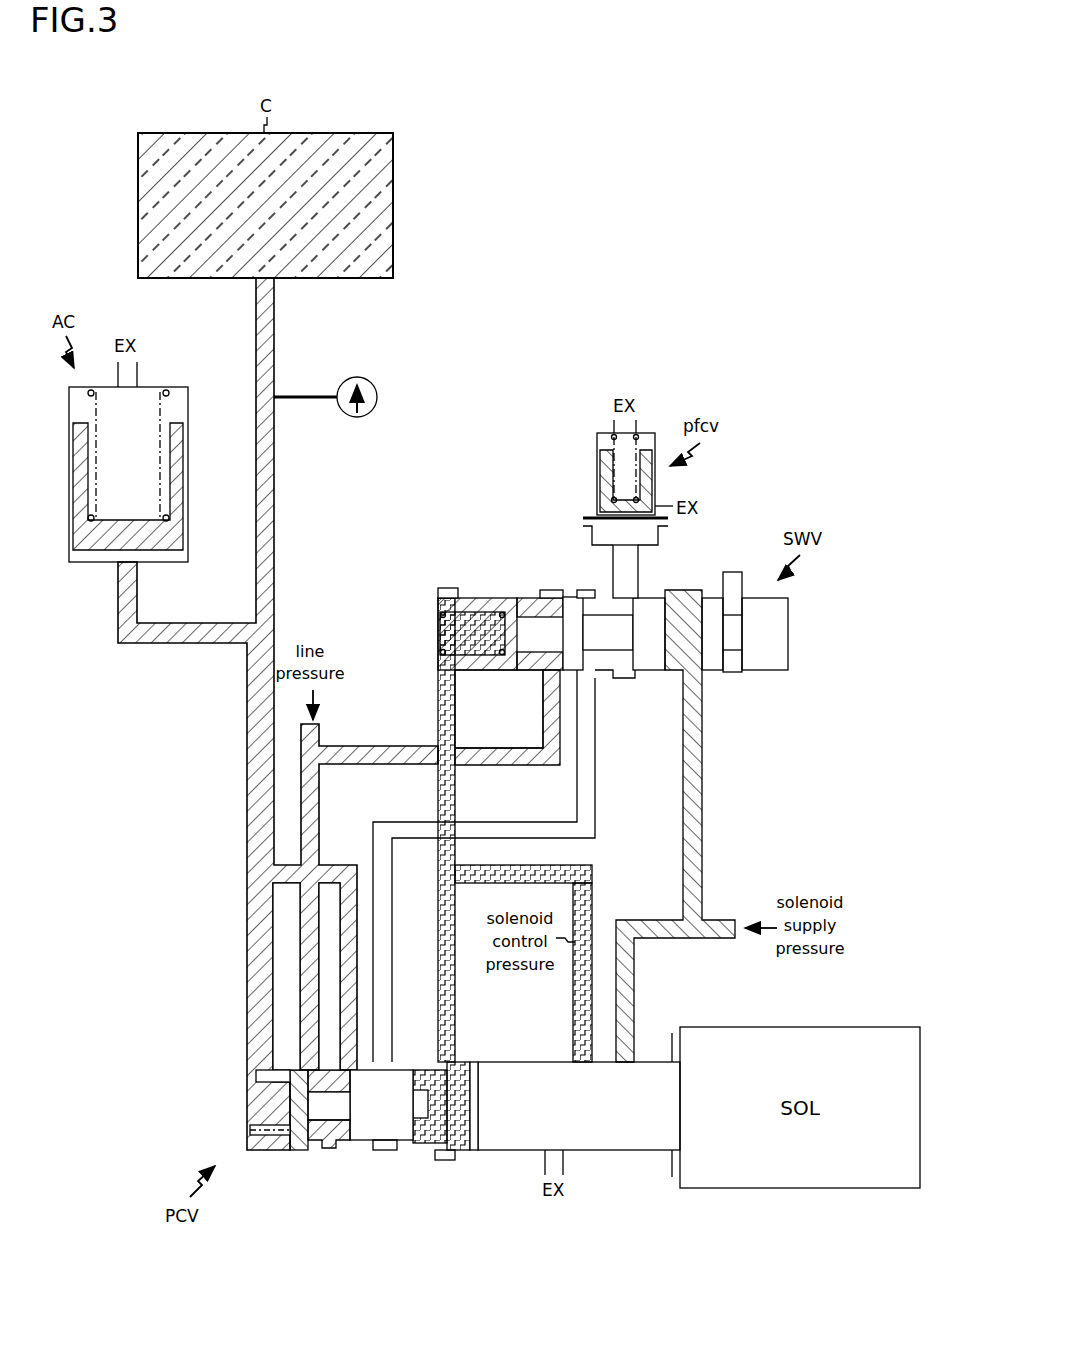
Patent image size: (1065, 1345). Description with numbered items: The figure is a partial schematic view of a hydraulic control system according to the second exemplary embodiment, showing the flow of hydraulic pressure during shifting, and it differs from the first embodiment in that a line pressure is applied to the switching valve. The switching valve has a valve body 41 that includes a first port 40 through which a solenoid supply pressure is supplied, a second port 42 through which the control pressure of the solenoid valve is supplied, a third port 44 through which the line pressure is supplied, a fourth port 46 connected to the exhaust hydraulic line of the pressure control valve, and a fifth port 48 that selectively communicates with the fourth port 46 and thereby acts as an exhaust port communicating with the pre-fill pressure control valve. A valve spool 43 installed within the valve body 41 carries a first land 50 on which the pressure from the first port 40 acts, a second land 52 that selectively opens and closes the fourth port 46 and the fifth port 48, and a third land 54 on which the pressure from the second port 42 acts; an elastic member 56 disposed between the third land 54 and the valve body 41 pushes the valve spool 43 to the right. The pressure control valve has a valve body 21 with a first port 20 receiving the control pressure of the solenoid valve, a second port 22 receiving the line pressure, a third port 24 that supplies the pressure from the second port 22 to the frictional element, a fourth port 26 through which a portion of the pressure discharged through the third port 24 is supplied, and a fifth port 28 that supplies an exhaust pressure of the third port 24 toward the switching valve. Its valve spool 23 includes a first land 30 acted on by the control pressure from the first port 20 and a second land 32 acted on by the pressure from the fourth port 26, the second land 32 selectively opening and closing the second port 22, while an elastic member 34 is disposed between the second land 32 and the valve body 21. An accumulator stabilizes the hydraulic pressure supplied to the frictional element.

The first port 20 is at (455, 1060).
The valve body 21 is at (325, 1146).
The second port 22 is at (300, 1058).
The valve spool 23 is at (340, 1110).
The third port 24 is at (347, 1050).
The fourth port 26 is at (252, 1059).
The fifth port 28 is at (385, 1063).
The first land 30 is at (397, 1128).
The second land 32 is at (300, 1152).
The elastic member 34 is at (250, 1129).
The first port 40 is at (700, 677).
The valve body 41 is at (677, 598).
The second port 42 is at (452, 688).
The valve spool 43 is at (612, 652).
The third port 44 is at (548, 676).
The fourth port 46 is at (585, 682).
The fifth port 48 is at (625, 594).
The first land 50 is at (658, 664).
The second land 52 is at (548, 594).
The third land 54 is at (457, 590).
The elastic member 56 is at (440, 616).